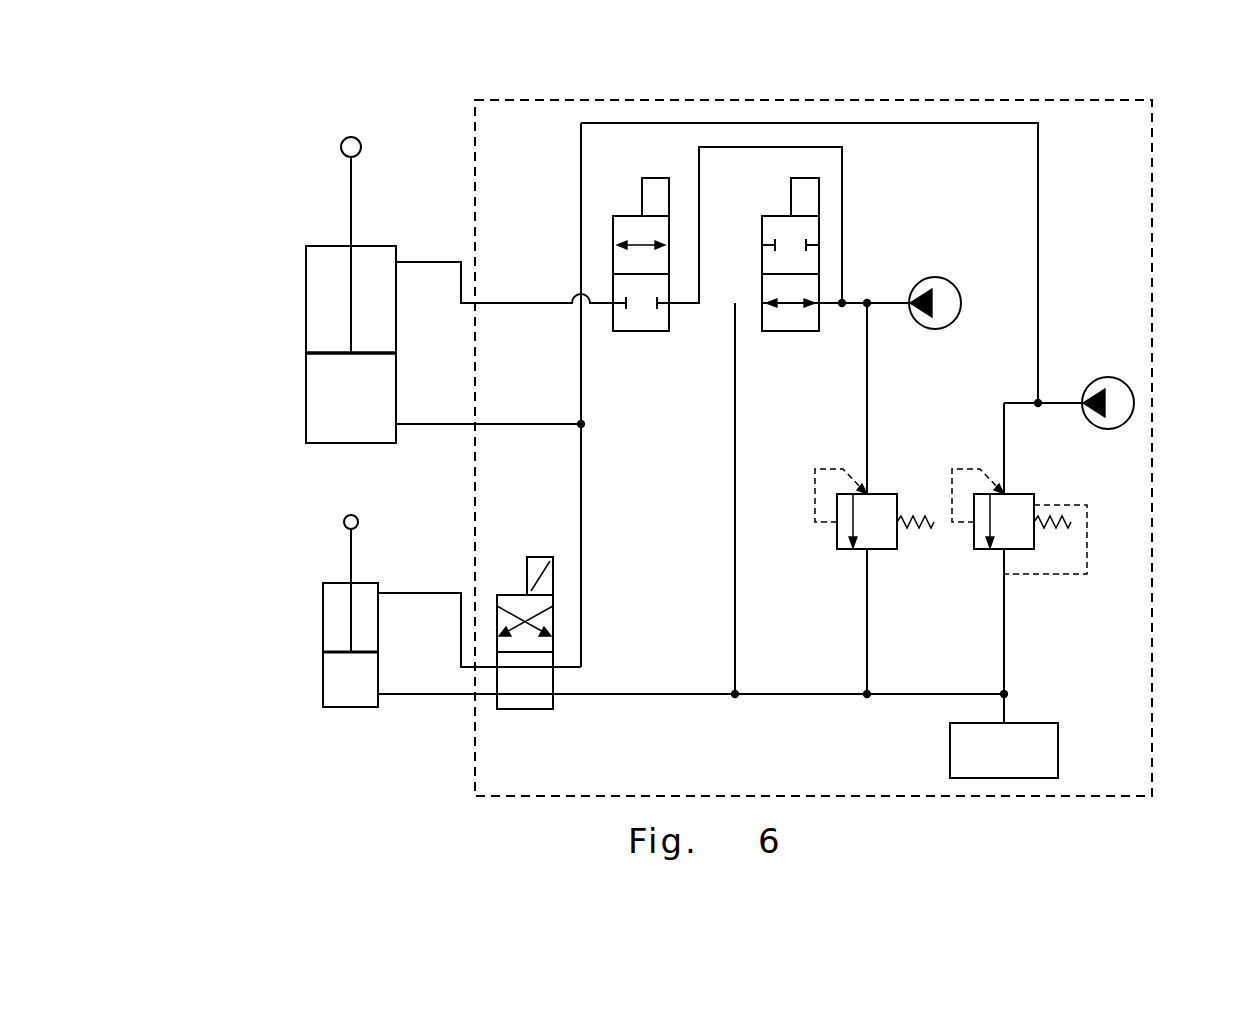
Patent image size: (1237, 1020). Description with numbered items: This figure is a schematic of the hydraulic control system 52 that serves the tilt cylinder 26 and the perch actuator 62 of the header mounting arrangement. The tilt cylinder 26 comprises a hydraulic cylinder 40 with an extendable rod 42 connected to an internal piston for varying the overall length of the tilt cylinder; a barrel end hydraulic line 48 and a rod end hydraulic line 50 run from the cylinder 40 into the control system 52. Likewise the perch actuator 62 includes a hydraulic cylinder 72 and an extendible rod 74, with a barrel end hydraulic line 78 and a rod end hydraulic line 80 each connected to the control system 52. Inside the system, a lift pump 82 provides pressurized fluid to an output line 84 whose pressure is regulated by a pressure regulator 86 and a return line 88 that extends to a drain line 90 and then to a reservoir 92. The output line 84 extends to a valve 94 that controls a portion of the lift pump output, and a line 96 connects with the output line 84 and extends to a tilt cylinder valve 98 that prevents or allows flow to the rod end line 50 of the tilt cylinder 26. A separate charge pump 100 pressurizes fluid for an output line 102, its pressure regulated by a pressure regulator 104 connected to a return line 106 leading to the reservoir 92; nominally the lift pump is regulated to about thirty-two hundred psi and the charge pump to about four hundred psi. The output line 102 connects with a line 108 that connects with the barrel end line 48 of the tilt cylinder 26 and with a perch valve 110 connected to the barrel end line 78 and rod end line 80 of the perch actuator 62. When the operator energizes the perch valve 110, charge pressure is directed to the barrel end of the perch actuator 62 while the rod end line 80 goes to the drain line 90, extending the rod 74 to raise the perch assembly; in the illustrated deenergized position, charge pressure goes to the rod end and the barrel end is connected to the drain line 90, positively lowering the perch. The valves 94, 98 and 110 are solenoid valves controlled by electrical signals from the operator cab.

The tilt cylinder 26 is at (291, 290).
The hydraulic cylinder 40 is at (306, 406).
The extendable rod 42 is at (349, 202).
The barrel end hydraulic line 48 is at (450, 426).
The rod end hydraulic line 50 is at (420, 262).
The hydraulic control system 52 is at (1154, 100).
The perch actuator 62 is at (305, 619).
The hydraulic cylinder 72 is at (320, 700).
The extendible rod 74 is at (348, 553).
The barrel end hydraulic line 78 is at (435, 696).
The rod end hydraulic line 80 is at (410, 593).
The lift pump 82 is at (941, 280).
The output line 84 is at (887, 303).
The pressure regulator 86 is at (882, 494).
The return line 88 is at (866, 620).
The drain line 90 is at (948, 692).
The reservoir 92 is at (1059, 745).
The valve 94 is at (791, 331).
The line 96 is at (843, 170).
The tilt cylinder valve 98 is at (630, 216).
The charge pump 100 is at (1112, 377).
The output line 102 is at (1063, 403).
The pressure regulator 104 is at (1023, 494).
The return line 106 is at (1005, 655).
The line 108 is at (1040, 202).
The perch valve 110 is at (537, 709).